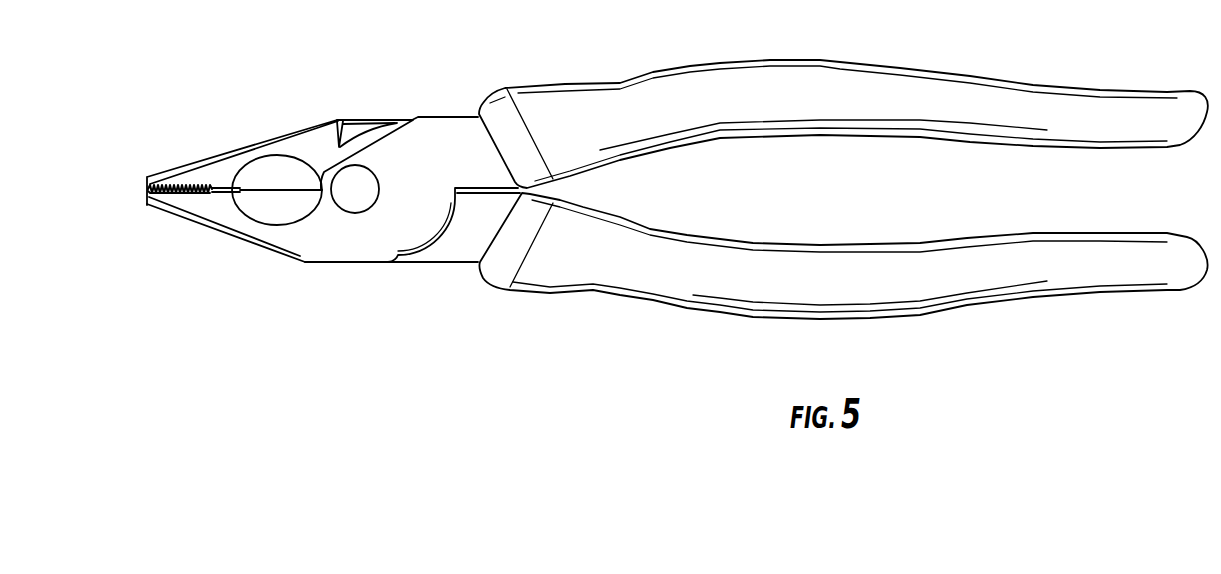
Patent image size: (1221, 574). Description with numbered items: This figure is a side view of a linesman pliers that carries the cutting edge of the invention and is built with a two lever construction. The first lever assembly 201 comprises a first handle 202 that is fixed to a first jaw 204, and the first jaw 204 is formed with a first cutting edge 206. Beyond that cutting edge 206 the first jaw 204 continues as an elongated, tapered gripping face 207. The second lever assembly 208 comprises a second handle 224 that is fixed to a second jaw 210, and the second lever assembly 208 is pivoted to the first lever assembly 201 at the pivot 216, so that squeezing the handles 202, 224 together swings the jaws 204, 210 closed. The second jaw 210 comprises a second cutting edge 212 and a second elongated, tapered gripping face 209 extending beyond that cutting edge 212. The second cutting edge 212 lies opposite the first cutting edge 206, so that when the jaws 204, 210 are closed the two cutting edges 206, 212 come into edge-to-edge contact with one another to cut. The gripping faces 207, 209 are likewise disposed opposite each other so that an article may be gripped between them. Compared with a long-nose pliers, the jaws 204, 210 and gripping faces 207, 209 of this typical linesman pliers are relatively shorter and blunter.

The first lever assembly 201 is at (843, 287).
The first handle 202 is at (602, 283).
The first jaw 204 is at (258, 139).
The first cutting edge 206 is at (275, 190).
The gripping face 207 is at (185, 189).
The second lever assembly 208 is at (843, 103).
The second gripping face 209 is at (173, 193).
The second jaw 210 is at (256, 240).
The second cutting edge 212 is at (262, 191).
The pivot 216 is at (357, 200).
The second handle 224 is at (628, 102).